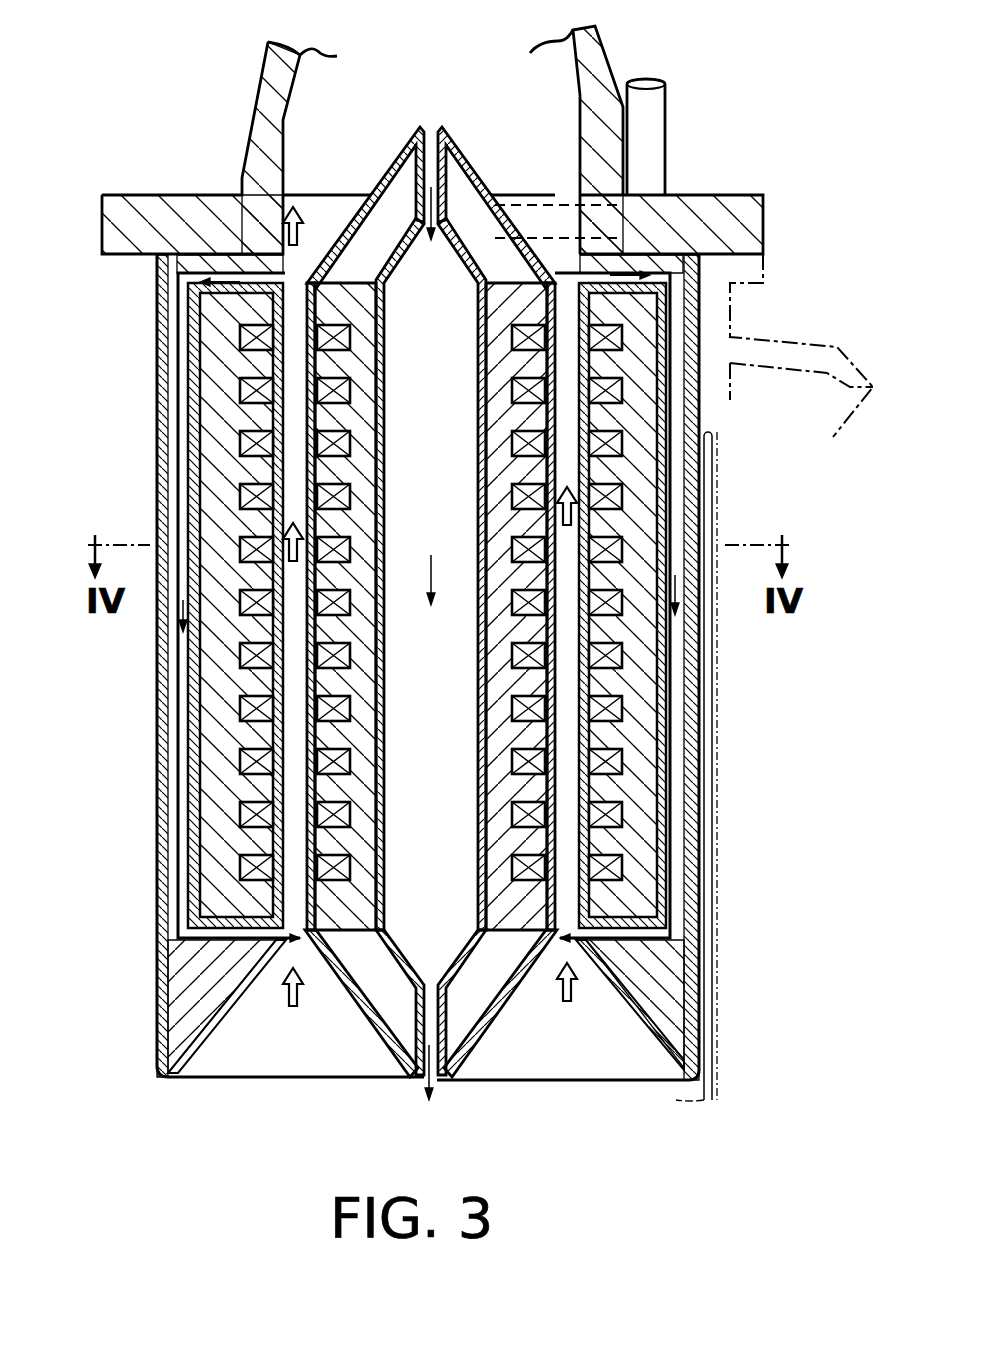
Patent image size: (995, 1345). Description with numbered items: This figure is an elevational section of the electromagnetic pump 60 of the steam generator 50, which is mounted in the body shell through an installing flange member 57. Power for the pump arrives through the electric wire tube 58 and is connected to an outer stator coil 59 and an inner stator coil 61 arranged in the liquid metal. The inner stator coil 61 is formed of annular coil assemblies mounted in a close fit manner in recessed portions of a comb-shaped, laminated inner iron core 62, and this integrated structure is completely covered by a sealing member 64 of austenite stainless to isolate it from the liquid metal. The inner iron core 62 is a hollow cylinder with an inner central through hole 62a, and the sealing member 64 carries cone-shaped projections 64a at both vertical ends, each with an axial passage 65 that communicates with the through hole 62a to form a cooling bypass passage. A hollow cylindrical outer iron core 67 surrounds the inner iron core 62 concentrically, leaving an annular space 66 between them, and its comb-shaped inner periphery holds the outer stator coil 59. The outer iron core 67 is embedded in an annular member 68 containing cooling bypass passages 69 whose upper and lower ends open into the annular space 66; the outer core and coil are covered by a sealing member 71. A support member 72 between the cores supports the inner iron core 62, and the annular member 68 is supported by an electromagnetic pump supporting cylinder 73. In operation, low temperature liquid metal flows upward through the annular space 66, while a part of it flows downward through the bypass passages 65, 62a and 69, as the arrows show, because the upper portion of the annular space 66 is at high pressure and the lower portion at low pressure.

The steam generator 50 is at (780, 335).
The installing flange member 57 is at (178, 195).
The electric wire tube 58 is at (667, 122).
The outer stator coil 59 is at (240, 337).
The electromagnetic pump 60 is at (483, 580).
The inner stator coil 61 is at (348, 337).
The inner iron core 62 is at (374, 497).
The inner central through hole 62a is at (443, 923).
The sealing member 64 is at (478, 652).
The corn shaped projections 64a is at (398, 157).
The passages 65 is at (430, 153).
The annular space 66 is at (558, 672).
The outer iron core 67 is at (208, 480).
The annular member 68 is at (165, 743).
The cooling bypass passages 69 is at (577, 275).
The sealing member 71 is at (248, 838).
The support member 72 is at (333, 207).
The electromagnetic pump supporting cylinder 73 is at (703, 695).